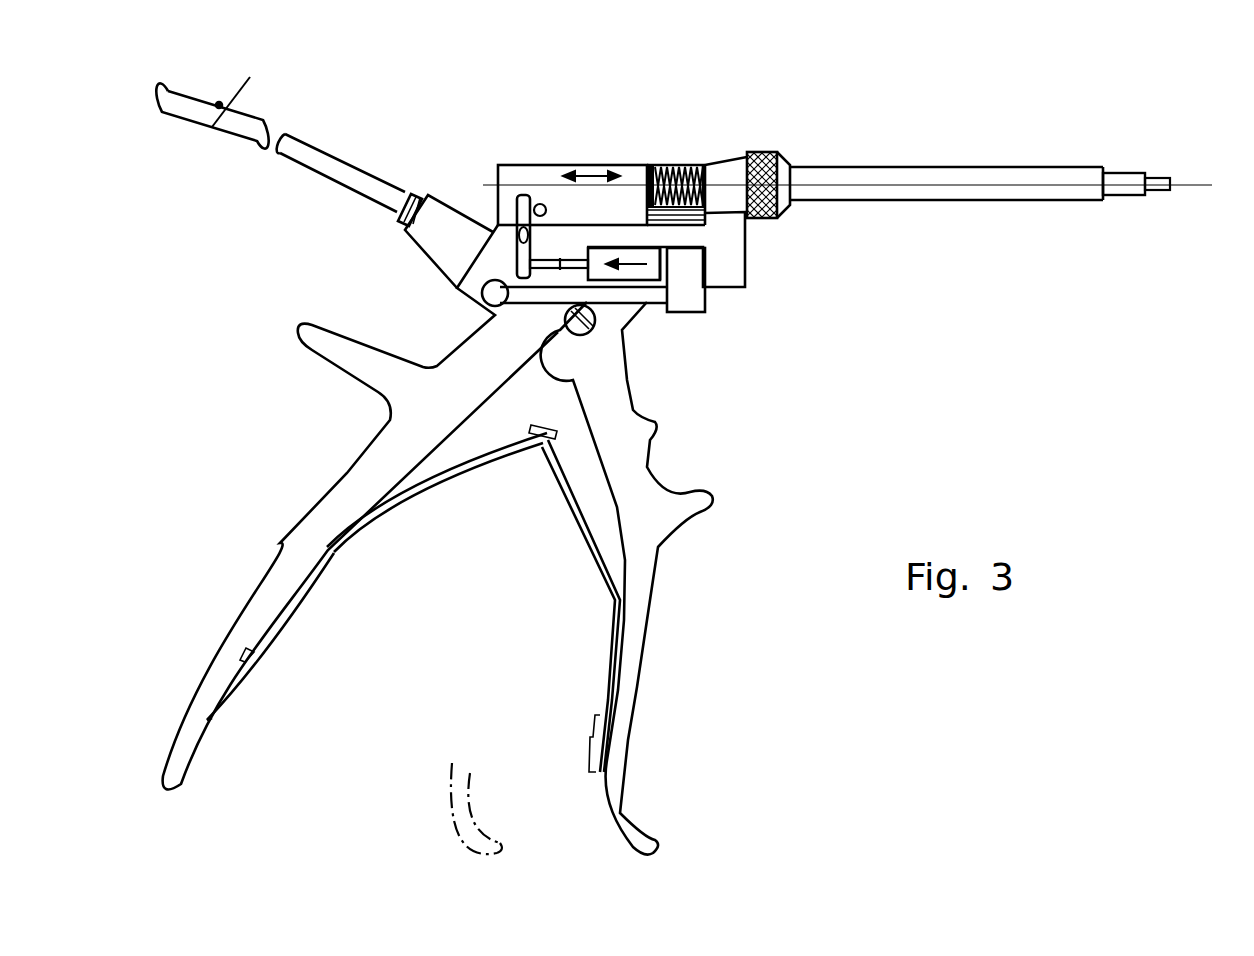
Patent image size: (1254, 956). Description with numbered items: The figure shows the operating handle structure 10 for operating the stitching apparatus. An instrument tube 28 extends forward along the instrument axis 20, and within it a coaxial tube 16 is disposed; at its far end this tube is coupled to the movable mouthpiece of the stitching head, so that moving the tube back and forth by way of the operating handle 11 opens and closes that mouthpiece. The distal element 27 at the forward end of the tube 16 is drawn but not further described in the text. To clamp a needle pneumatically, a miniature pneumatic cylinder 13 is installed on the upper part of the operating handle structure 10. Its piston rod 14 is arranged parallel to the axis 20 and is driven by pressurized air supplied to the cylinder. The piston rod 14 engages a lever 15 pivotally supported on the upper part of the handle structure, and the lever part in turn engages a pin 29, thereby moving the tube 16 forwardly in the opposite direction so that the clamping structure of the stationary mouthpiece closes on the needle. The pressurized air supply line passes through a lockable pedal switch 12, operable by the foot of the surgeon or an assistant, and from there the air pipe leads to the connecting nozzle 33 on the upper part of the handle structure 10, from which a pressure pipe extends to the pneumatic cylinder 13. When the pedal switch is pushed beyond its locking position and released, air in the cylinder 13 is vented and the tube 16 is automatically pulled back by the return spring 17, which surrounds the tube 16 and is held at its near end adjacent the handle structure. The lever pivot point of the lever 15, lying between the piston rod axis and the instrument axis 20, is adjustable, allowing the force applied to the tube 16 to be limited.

The operating handle structure 10 is at (430, 671).
The operating handle 11 is at (633, 630).
The pedal switch 12 is at (232, 95).
The pneumatic cylinder 13 is at (645, 272).
The piston rod 14 is at (562, 272).
The lever 15 is at (513, 193).
The coaxial tube 16 is at (1128, 175).
The return spring 17 is at (668, 168).
The instrument axis 20 is at (1190, 182).
The distal tip 27 is at (1155, 192).
The instrument tube 28 is at (963, 178).
The pin 29 is at (542, 205).
The connecting nozzle 33 is at (437, 233).